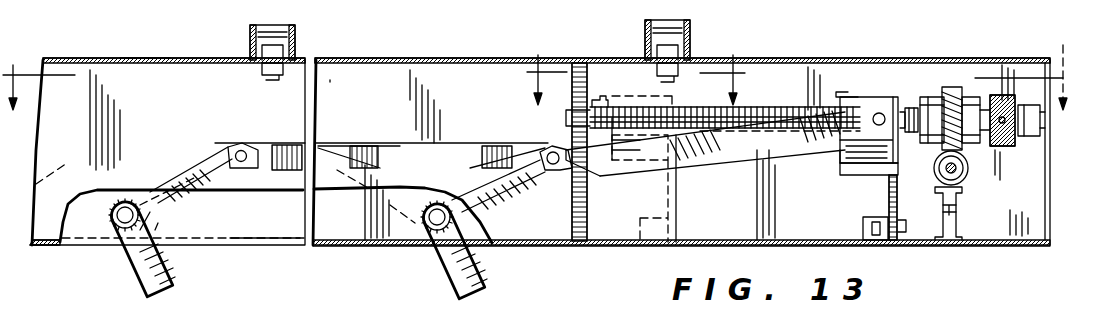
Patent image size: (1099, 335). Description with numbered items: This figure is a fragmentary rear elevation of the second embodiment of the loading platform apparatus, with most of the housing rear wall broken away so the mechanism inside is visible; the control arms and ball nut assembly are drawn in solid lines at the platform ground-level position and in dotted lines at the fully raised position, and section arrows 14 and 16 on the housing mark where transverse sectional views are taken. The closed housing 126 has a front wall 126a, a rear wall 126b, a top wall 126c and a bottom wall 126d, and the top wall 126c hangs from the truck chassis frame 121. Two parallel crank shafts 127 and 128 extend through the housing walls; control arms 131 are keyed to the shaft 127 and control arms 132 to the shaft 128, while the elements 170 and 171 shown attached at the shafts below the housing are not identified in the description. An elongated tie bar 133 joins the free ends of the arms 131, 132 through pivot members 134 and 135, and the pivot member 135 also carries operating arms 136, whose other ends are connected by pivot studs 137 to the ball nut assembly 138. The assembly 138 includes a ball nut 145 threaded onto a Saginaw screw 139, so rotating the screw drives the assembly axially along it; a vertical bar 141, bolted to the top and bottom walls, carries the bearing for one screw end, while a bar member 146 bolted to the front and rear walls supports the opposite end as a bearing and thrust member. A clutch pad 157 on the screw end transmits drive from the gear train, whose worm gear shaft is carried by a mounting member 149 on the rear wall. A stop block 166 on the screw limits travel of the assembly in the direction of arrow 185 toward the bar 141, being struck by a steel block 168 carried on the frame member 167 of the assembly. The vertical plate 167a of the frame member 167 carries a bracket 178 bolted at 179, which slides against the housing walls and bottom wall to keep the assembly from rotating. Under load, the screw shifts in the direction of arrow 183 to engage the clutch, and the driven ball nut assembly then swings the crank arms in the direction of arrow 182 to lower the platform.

The section line 14- 14 is at (535, 61).
The section line 16- 16 is at (620, 65).
The chassis frame 121 is at (302, 48).
The closed housing 126 is at (428, 33).
The front wall 126a is at (496, 96).
The rear wall 126b is at (265, 232).
The top wall 126c is at (145, 58).
The bottom wall 126d is at (37, 246).
The crank shaft 127 is at (125, 210).
The crank shaft 128 is at (432, 228).
The control arms 131 is at (60, 166).
The control arms 132 is at (505, 195).
The tie bar 133 is at (385, 142).
The pivot member 134 is at (243, 141).
The pivot member 135 is at (551, 147).
The operating arms 136 is at (737, 150).
The pivot studs 137 is at (870, 130).
The ball nut assembly 138 is at (626, 176).
The Saginaw screw 139 is at (750, 106).
The vertical bar 141 is at (578, 242).
The ball nut 145 is at (908, 100).
The bar member 146 is at (1006, 148).
The mounting member 149 is at (968, 175).
The clutch pad 157 is at (936, 95).
The stop block 166 is at (600, 98).
The frame member 167 is at (860, 166).
The vertical plate 167a is at (893, 203).
The steel block 168 is at (838, 92).
The crank link 170 is at (176, 276).
The crank link 171 is at (490, 278).
The bracket 178 is at (888, 240).
The bolted connection 179 is at (905, 226).
The arrow 182 is at (175, 222).
The arrow 183 is at (905, 25).
The arrow 185 is at (812, 29).